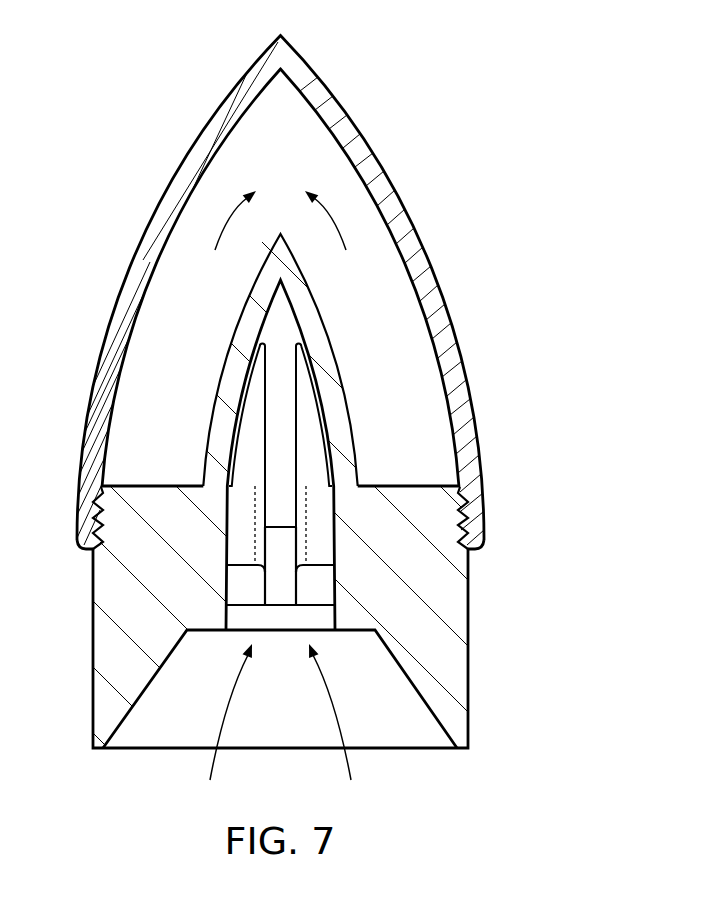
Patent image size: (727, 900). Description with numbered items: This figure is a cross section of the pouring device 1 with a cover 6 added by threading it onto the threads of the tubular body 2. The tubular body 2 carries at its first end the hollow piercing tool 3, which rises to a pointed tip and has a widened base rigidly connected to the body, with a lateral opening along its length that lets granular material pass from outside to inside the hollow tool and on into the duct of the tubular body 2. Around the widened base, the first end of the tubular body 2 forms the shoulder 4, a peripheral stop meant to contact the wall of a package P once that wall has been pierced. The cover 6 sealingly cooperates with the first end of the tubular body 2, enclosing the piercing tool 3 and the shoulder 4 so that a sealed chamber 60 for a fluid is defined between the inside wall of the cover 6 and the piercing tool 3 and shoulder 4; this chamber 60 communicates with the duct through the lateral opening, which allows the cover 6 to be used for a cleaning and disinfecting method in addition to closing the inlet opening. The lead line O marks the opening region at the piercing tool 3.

The pouring device 1 is at (605, 342).
The tubular body 2 is at (443, 611).
The hollow piercing tool 3 is at (343, 302).
The shoulder 4 is at (418, 463).
The cover 6 is at (385, 200).
The sealed chamber 60 is at (268, 172).
The orifice O is at (322, 388).
The package P is at (252, 440).